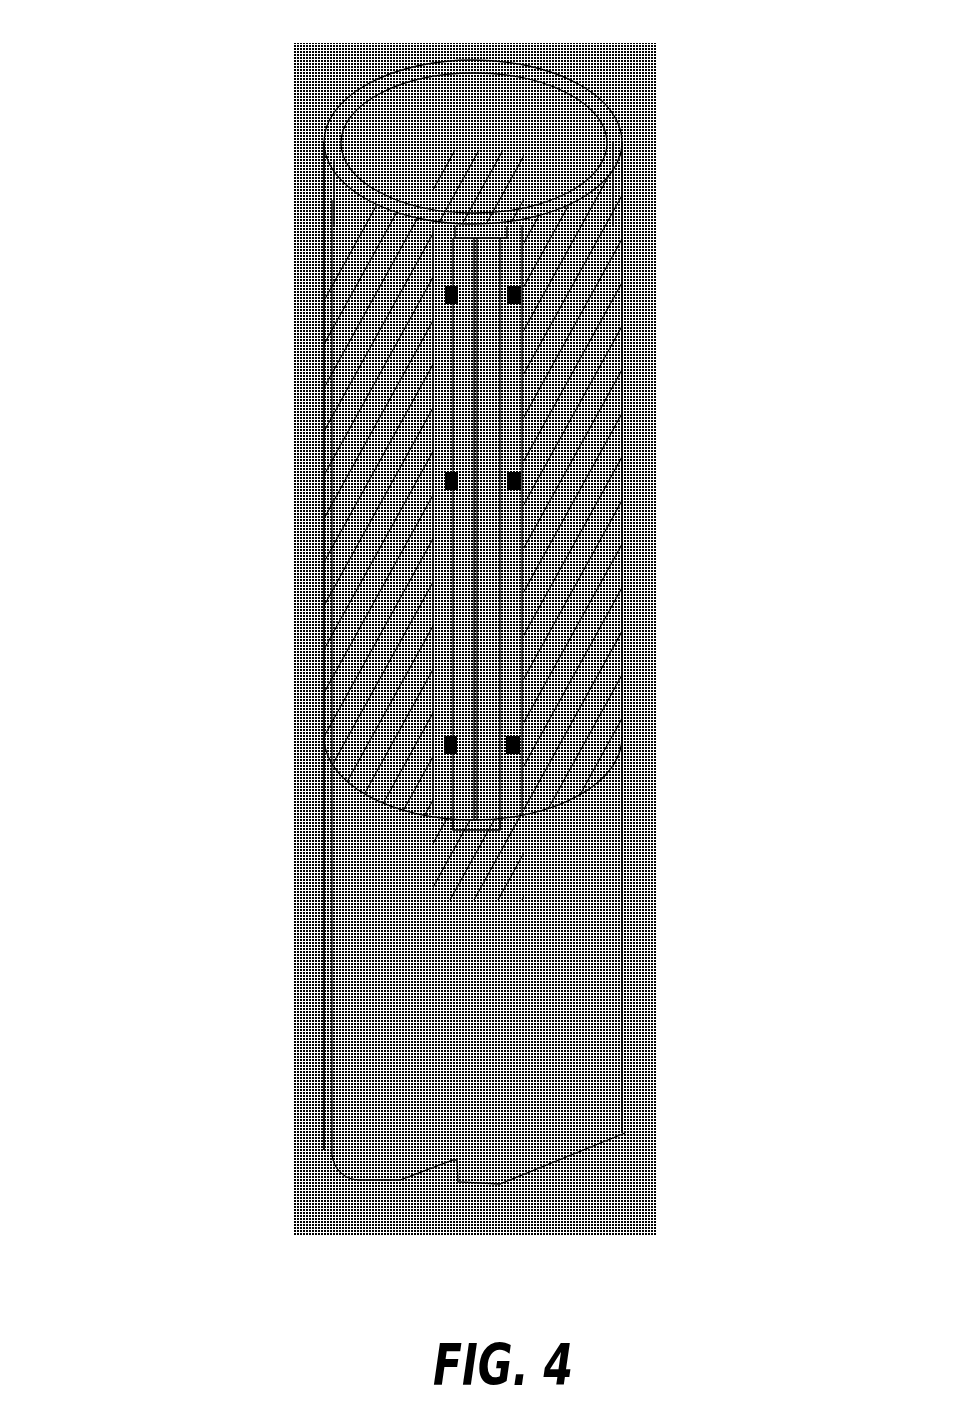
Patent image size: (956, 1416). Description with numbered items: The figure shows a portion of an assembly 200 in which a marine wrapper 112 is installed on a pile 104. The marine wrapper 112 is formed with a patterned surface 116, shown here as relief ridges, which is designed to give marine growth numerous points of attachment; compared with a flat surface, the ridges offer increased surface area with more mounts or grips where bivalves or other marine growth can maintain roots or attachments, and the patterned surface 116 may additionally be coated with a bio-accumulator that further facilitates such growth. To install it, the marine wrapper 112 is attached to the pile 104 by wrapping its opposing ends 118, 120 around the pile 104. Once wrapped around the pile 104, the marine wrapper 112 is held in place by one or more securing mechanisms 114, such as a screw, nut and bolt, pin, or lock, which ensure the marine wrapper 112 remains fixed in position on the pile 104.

The battery cell assembly 200 is at (100, 200).
The pile 104 is at (608, 890).
The marine wrapper 112 is at (604, 92).
The securing mechanisms 114 is at (507, 723).
The patterned surface 116 is at (583, 507).
The opposing end 118 is at (490, 385).
The opposing end 120 is at (463, 385).